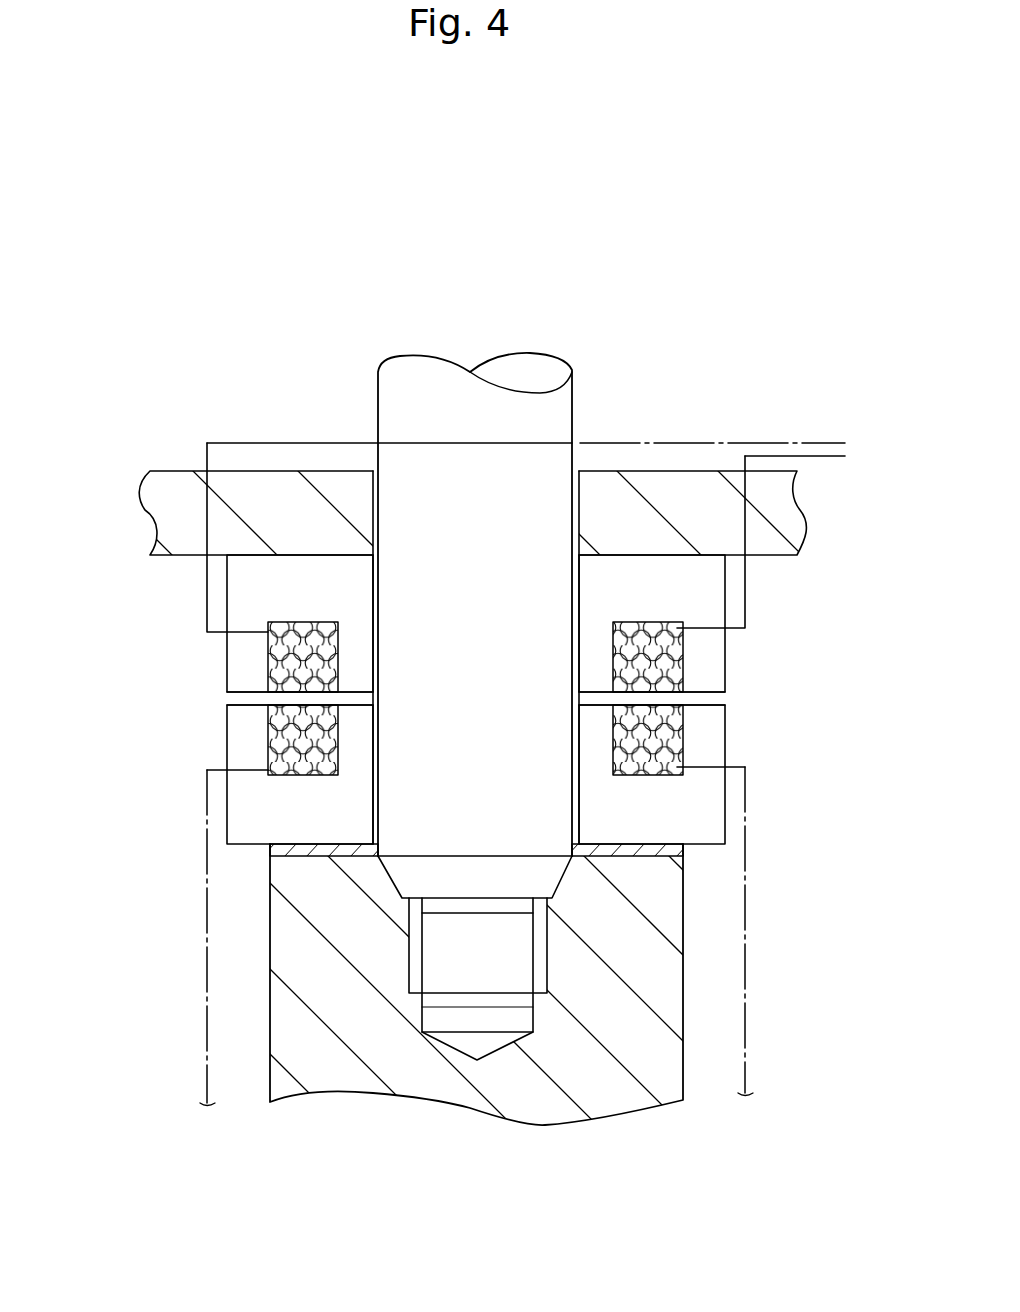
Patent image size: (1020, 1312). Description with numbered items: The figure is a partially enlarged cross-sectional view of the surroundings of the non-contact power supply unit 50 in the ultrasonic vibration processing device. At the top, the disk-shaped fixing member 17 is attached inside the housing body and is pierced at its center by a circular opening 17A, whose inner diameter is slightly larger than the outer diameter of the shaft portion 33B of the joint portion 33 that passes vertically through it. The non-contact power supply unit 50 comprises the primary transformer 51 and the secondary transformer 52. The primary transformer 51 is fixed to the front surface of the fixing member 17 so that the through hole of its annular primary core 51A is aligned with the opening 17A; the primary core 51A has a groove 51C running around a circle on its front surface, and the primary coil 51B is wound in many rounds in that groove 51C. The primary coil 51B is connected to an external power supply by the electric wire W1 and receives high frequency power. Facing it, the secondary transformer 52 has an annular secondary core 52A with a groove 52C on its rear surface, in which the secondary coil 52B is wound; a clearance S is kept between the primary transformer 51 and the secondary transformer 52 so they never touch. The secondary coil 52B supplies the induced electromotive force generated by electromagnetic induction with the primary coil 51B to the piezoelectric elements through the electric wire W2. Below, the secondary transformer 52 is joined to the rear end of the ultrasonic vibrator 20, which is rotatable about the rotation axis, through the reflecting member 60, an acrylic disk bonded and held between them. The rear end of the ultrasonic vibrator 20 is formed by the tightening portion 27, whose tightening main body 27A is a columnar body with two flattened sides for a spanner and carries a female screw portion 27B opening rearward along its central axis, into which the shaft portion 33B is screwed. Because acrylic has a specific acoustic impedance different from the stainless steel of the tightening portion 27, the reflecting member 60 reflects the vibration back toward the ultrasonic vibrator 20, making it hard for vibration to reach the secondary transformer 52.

The fixing member 17 is at (796, 524).
The opening 17A is at (577, 497).
The electric wire W1 is at (780, 440).
The joint portion 33 is at (421, 567).
The shaft portion 33B is at (397, 388).
The non-contact power supply unit 50 is at (441, 699).
The primary transformer 51 is at (463, 623).
The primary core 51A is at (250, 604).
The primary coil 51B is at (270, 658).
The groove 51C is at (690, 673).
The secondary transformer 52 is at (464, 769).
The secondary core 52A is at (240, 753).
The secondary coil 52B is at (270, 733).
The groove 52C is at (688, 722).
The clearance S is at (731, 698).
The reflecting member 60 is at (307, 858).
The tightening portion 27 is at (510, 1012).
The tightening main body 27A is at (510, 990).
The female screw portion 27B is at (413, 950).
The electric wire W2 is at (748, 910).
The ultrasonic vibrator 20 is at (662, 1147).